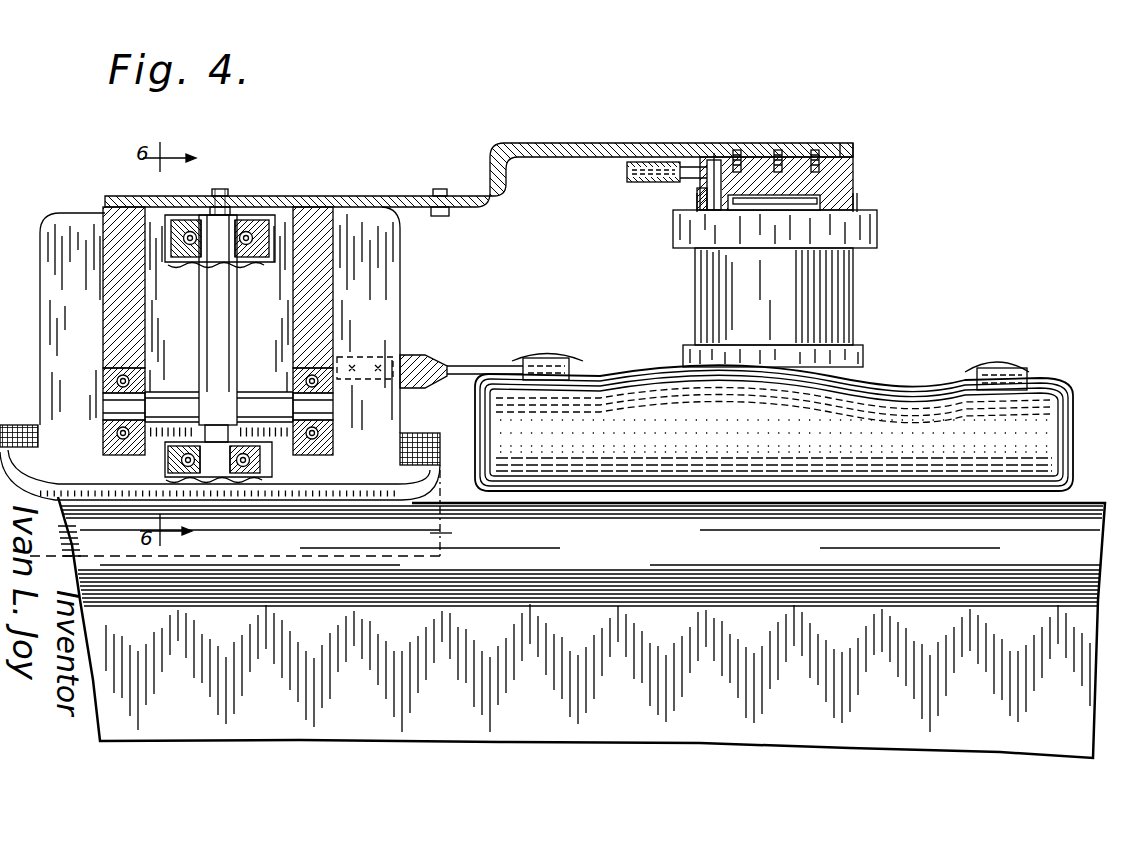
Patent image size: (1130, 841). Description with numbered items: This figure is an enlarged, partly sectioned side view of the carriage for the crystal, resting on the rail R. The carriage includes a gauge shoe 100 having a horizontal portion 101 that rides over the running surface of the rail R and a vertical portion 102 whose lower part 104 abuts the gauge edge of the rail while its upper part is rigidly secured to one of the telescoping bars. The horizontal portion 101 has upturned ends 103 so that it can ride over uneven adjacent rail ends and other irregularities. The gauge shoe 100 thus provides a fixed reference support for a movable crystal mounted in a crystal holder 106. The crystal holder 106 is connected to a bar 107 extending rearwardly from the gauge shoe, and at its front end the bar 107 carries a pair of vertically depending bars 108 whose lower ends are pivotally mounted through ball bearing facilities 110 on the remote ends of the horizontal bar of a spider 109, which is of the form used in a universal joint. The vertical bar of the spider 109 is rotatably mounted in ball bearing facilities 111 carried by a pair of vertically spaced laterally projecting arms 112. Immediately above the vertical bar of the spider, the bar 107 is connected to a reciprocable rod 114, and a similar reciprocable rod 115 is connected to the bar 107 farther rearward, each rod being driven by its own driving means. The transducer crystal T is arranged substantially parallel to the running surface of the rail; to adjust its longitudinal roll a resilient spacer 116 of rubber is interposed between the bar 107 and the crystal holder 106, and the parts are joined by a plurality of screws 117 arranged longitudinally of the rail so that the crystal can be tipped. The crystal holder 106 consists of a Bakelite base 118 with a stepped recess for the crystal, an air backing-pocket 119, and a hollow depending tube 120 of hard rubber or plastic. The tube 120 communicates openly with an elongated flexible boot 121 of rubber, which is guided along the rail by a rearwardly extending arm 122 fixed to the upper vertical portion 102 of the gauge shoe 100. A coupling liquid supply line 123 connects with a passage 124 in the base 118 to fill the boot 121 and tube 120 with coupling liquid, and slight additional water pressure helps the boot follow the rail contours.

The gauge shoe 100 is at (365, 503).
The horizontal portion 101 is at (88, 456).
The vertical portion 102 is at (380, 416).
The upturned ends 103 is at (20, 443).
The lower part 104 is at (455, 533).
The crystal holder 106 is at (866, 261).
The bar 107 is at (518, 144).
The vertically depending bars 108 is at (118, 286).
The spider 109 is at (222, 327).
The ball bearing facilities 110 is at (150, 438).
The ball bearing facilities 111 is at (192, 262).
The laterally projecting arms 112 is at (271, 249).
The reciprocable rod 114 is at (230, 194).
The reciprocable rod 115 is at (446, 190).
The resilient spacer 116 is at (852, 150).
The screws 117 is at (815, 150).
The Bakelite base 118 is at (853, 184).
The air backing-pocket 119 is at (720, 190).
The hollow depending tube 120 is at (842, 288).
The elongated boot 121 is at (775, 447).
The rearwardly extending arm 122 is at (458, 366).
The coupling liquid supply line 123 is at (627, 173).
The passage 124 is at (710, 160).
The transducer crystal T is at (750, 208).
The rail R is at (628, 562).